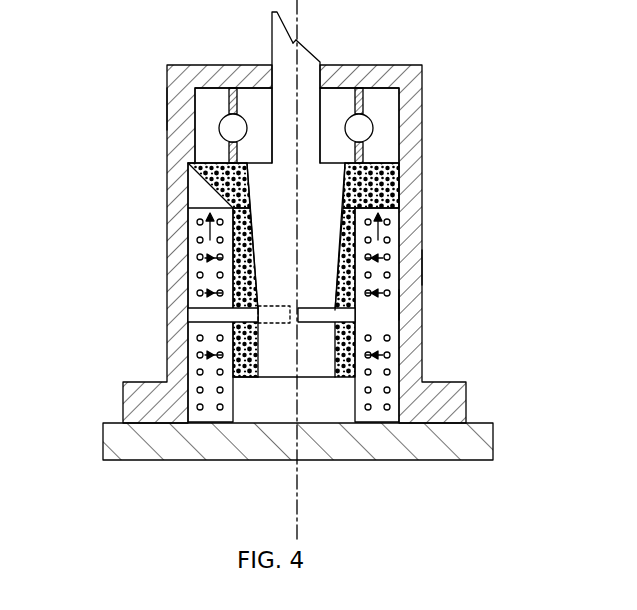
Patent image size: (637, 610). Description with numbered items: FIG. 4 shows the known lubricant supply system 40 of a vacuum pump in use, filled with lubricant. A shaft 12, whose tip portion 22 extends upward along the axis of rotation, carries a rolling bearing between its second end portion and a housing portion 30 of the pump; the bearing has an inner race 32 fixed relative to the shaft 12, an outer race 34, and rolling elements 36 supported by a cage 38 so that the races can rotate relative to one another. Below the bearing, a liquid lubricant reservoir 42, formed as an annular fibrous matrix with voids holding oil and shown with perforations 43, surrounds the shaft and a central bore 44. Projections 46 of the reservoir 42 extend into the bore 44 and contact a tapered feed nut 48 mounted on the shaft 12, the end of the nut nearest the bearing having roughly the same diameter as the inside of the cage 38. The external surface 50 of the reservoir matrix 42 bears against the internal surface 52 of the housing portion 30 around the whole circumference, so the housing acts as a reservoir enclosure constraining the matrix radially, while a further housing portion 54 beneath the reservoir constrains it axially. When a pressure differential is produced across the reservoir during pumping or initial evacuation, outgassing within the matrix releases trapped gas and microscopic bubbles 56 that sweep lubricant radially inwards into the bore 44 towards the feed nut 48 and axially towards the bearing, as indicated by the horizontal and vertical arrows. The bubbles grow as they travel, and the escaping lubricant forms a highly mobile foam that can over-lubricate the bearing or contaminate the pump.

The shaft 12 is at (292, 108).
The rod tip 22 is at (298, 3).
The housing portion 30 is at (413, 233).
The inner race 32 is at (189, 182).
The outer race 34 is at (187, 112).
The rolling elements 36 is at (218, 132).
The cage 38 is at (208, 117).
The lubricant supply system 40 is at (146, 243).
The liquid lubricant reservoir 42 is at (188, 354).
The perforations 43 is at (200, 325).
The central bore 44 is at (247, 390).
The projections 46 is at (197, 306).
The tapered feed nut 48 is at (330, 230).
The external surface 50 is at (407, 268).
The internal surface 52 is at (420, 305).
The further housing portion 54 is at (365, 443).
The bubbles 56 is at (200, 338).